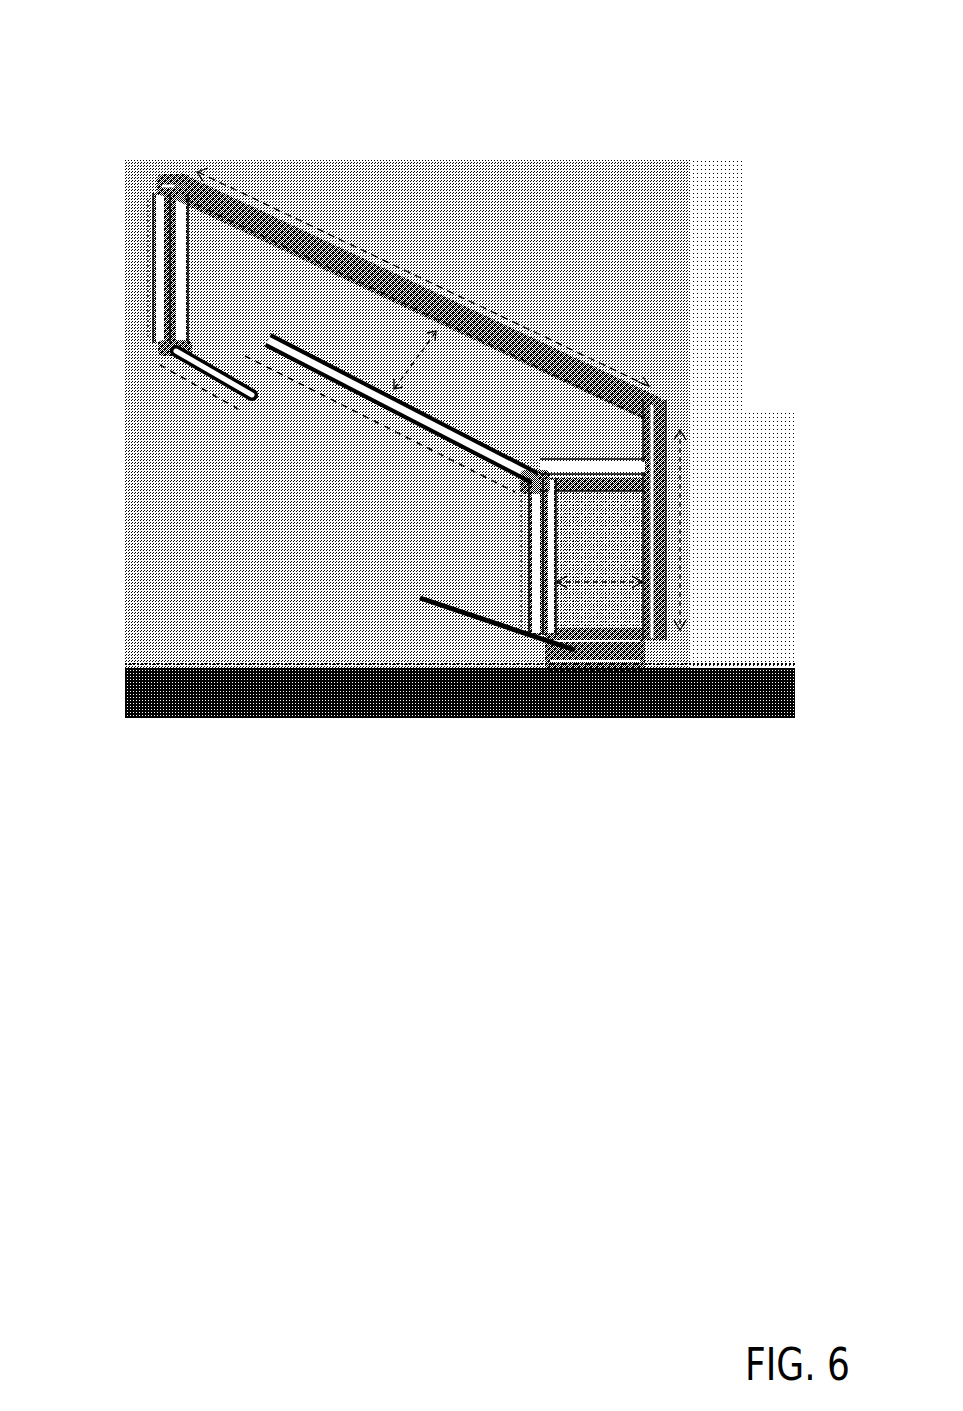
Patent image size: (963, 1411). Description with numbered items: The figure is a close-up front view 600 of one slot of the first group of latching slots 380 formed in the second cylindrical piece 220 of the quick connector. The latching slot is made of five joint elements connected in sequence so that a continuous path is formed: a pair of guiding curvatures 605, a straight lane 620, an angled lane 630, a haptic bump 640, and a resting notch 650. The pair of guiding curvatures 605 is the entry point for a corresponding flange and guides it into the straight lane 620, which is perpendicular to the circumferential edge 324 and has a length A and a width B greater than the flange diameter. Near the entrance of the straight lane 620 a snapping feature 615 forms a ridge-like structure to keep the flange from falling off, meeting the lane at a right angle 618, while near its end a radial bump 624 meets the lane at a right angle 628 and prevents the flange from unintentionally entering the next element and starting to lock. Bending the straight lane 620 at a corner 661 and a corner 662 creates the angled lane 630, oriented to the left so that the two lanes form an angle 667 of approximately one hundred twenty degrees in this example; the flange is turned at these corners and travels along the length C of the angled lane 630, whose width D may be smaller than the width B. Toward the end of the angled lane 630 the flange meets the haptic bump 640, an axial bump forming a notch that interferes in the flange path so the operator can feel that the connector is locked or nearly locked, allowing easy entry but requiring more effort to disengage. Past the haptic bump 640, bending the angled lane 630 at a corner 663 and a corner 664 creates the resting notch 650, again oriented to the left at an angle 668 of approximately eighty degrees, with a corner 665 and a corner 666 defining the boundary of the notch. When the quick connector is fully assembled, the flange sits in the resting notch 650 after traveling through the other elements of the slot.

The close-up front view 600 is at (118, 43).
The first group of latching slots 380 is at (688, 243).
The second cylindrical piece 220 is at (345, 756).
The circumferential edge 324 is at (270, 672).
The pair of guiding curvatures 605 is at (640, 674).
The resting notch 650 is at (210, 316).
The corner 663 is at (170, 172).
The haptic bump 640 is at (272, 232).
The angled lane 630 is at (475, 362).
The corner 664 is at (263, 342).
The corner 665 is at (162, 350).
The corner 666 is at (248, 395).
The angle 668 is at (262, 372).
The corner 661 is at (655, 412).
The radial bump 624 is at (560, 493).
The straight lane 620 is at (555, 557).
The corner 662 is at (535, 482).
The angle 667 is at (518, 488).
The right angle 628 is at (640, 530).
The right angle 618 is at (645, 610).
The snapping feature 615 is at (479, 615).